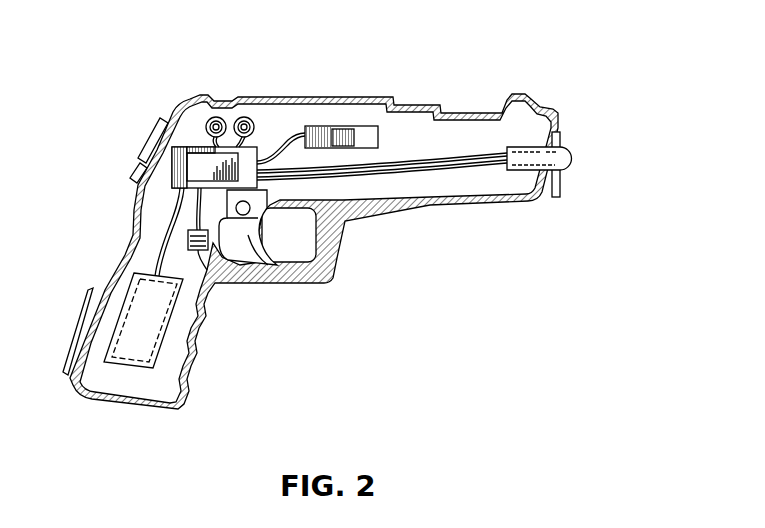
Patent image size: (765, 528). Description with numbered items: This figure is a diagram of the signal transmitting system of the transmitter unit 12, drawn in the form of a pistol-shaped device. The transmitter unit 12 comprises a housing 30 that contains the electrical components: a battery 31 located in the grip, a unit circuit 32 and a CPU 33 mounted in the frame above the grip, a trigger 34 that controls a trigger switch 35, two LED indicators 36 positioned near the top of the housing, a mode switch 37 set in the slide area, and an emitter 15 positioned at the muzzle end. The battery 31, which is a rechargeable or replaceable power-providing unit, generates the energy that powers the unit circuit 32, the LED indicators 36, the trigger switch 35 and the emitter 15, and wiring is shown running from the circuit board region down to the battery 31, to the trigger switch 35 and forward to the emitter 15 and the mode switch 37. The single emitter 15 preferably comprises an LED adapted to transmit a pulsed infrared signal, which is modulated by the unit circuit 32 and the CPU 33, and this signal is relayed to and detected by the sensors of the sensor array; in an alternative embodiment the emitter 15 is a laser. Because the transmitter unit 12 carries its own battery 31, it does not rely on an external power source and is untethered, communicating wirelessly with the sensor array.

The transmitter unit 12 is at (131, 119).
The emitter 15 is at (573, 158).
The housing 30 is at (434, 108).
The battery 31 is at (130, 303).
The unit circuit 32 is at (172, 167).
The CPU 33 is at (195, 171).
The trigger 34 is at (275, 262).
The trigger switch 35 is at (208, 272).
The LED indicator 36 is at (216, 117).
The mode switch 37 is at (345, 126).